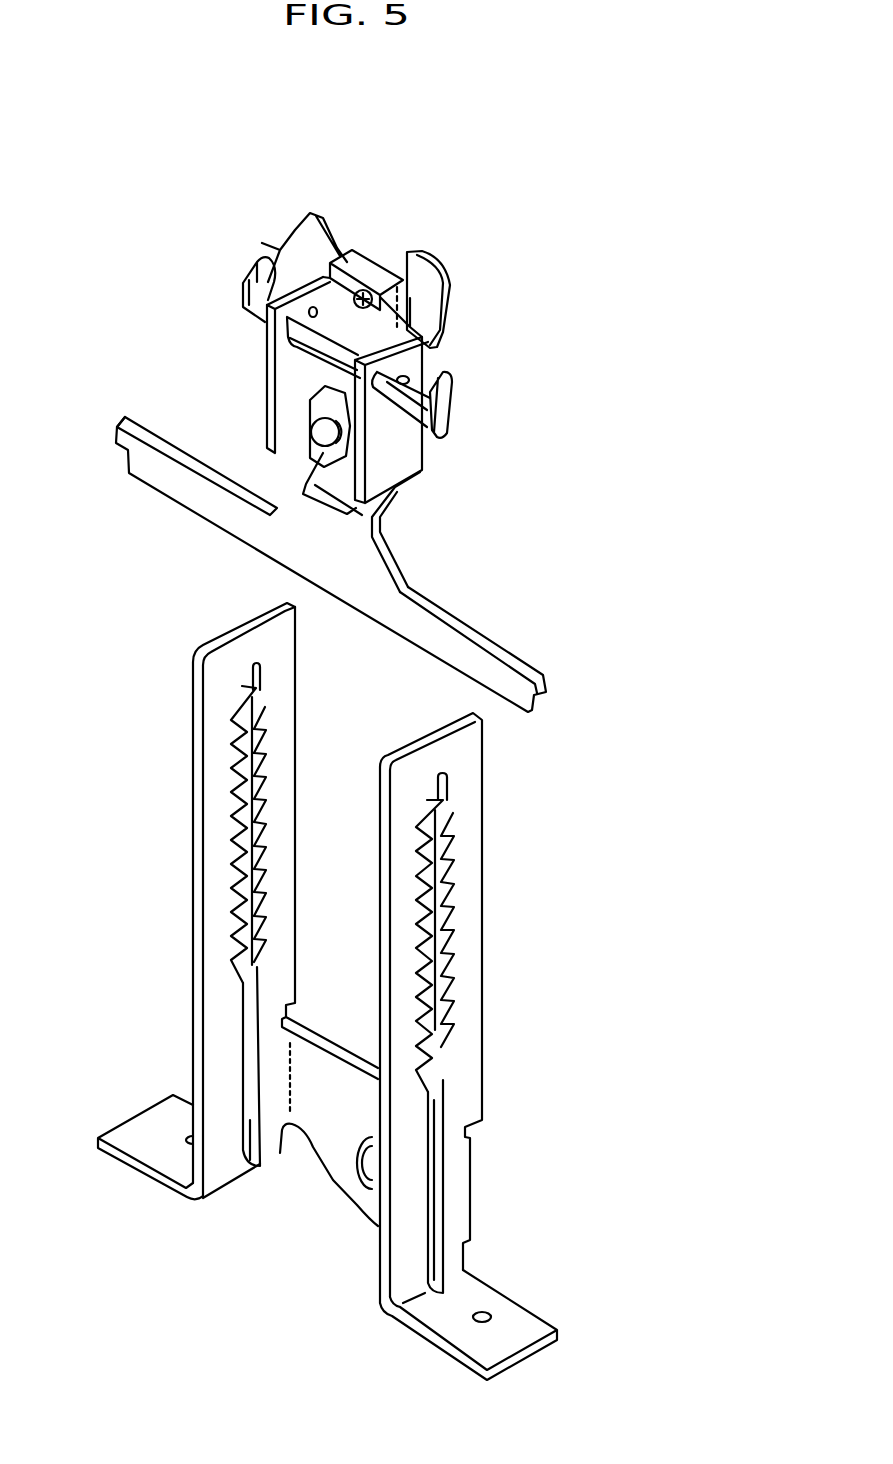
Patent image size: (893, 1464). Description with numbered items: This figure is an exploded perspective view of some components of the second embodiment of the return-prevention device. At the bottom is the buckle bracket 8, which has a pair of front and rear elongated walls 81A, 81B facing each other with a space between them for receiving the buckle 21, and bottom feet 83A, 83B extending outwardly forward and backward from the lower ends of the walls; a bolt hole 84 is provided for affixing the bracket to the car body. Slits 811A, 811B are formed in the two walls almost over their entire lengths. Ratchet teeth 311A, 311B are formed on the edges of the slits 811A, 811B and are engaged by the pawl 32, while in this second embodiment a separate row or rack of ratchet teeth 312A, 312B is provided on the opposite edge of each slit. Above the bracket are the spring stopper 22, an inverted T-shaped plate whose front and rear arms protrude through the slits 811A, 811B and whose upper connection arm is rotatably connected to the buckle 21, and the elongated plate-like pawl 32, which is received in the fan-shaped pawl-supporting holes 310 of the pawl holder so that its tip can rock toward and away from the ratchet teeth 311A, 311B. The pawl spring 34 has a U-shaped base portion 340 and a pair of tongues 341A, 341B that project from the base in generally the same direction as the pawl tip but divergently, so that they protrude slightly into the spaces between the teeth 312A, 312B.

The buckle bracket 8 is at (190, 798).
The buckle 21 is at (437, 252).
The spring stopper 22 is at (468, 627).
The pawl 32 is at (310, 345).
The pawl spring 34 is at (421, 443).
The pawl-supporting holes 310 is at (310, 312).
The U-shaped base portion 340 is at (448, 425).
The tongue 341A is at (258, 262).
The tongue 341B is at (450, 382).
The front elongated wall 81A is at (213, 952).
The rear elongated wall 81B is at (470, 998).
The bottom foot 83A is at (132, 1132).
The bottom foot 83B is at (513, 1313).
The bolt hole 84 is at (367, 1170).
The ratchet teeth 311A is at (247, 795).
The ratchet teeth 311B is at (430, 923).
The ratchet teeth 312A is at (250, 832).
The ratchet teeth 312B is at (443, 866).
The slit 811A is at (257, 1027).
The slit 811B is at (437, 1102).